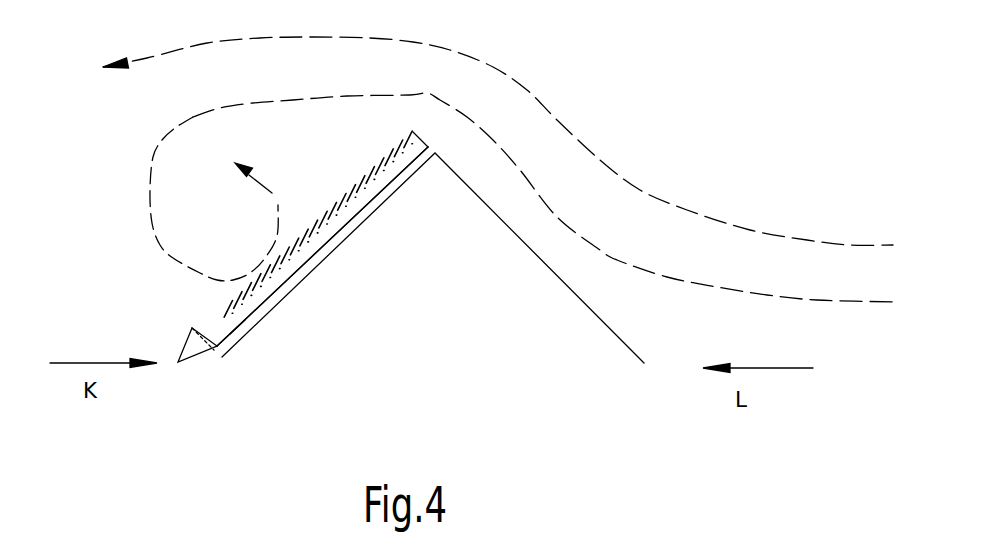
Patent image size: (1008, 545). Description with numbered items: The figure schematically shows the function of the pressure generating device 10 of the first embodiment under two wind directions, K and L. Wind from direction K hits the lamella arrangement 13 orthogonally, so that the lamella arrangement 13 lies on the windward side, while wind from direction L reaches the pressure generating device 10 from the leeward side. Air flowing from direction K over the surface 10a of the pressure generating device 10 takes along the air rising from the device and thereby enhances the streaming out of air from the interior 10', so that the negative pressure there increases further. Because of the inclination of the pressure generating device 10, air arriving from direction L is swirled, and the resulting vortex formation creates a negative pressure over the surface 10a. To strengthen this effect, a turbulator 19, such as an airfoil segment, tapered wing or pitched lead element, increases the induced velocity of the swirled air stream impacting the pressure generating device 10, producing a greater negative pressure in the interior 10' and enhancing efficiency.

The pressure generating device 10 is at (430, 255).
The interior of the pressure generating device 10' is at (331, 240).
The surface of the pressure generating device 10a is at (218, 318).
The lamella arrangement 13 is at (344, 176).
The turbulator 19 is at (198, 345).